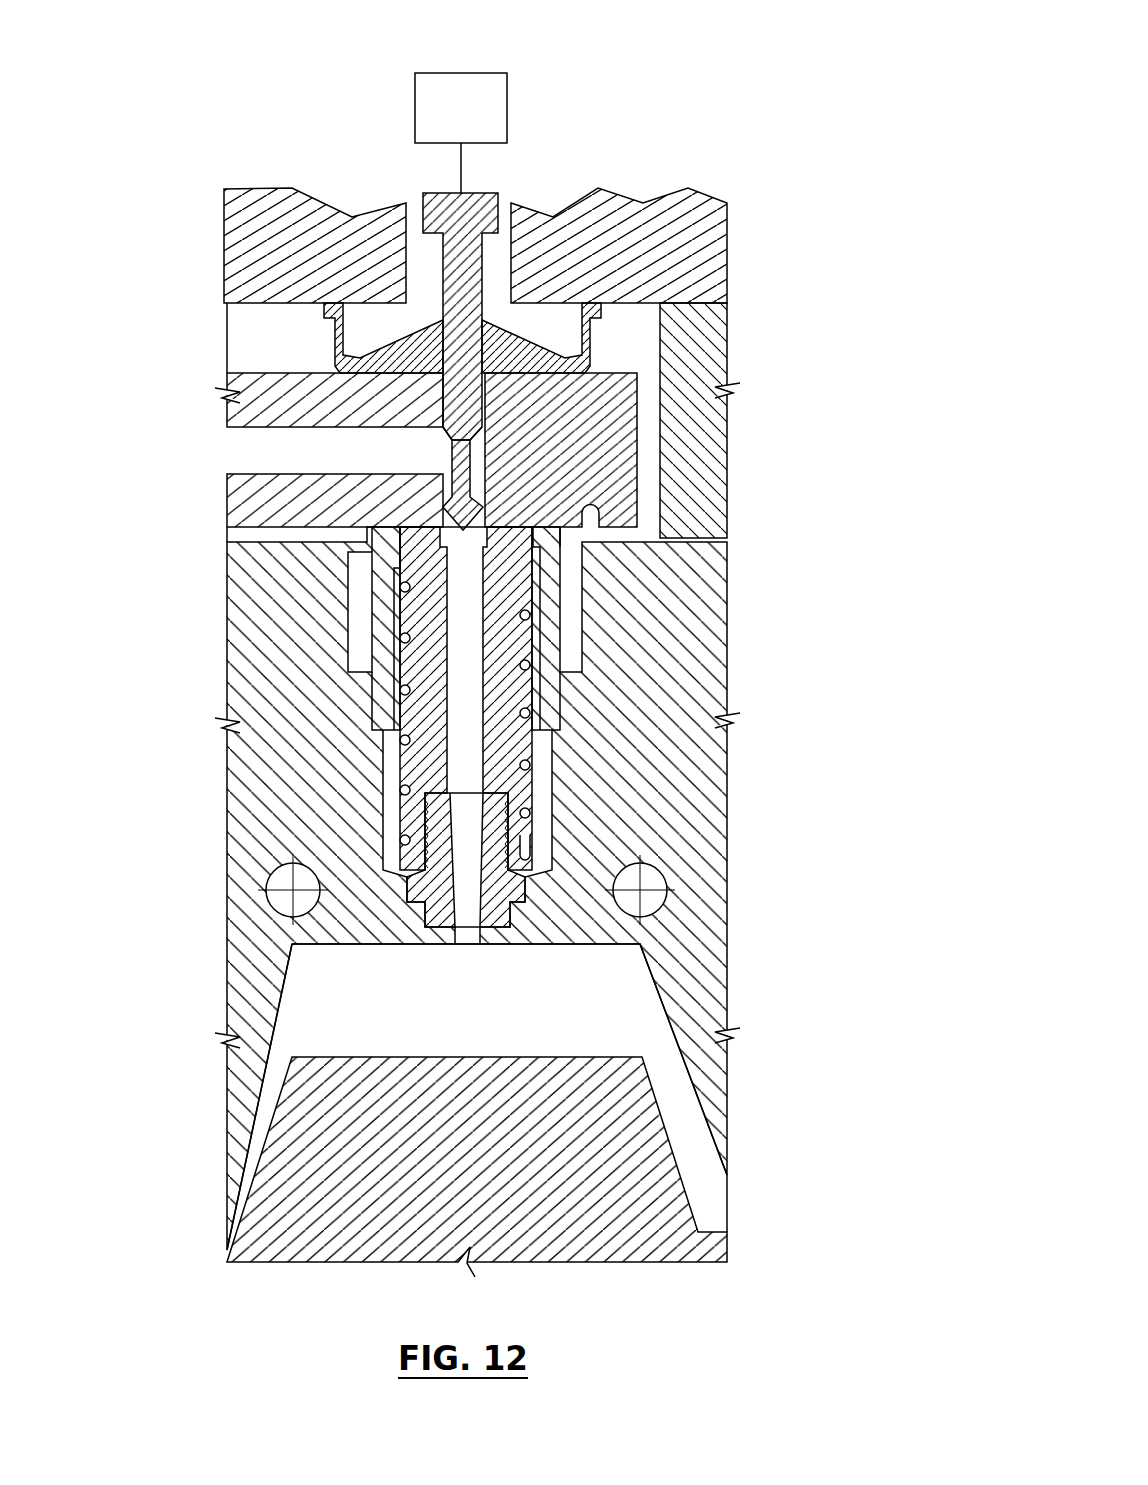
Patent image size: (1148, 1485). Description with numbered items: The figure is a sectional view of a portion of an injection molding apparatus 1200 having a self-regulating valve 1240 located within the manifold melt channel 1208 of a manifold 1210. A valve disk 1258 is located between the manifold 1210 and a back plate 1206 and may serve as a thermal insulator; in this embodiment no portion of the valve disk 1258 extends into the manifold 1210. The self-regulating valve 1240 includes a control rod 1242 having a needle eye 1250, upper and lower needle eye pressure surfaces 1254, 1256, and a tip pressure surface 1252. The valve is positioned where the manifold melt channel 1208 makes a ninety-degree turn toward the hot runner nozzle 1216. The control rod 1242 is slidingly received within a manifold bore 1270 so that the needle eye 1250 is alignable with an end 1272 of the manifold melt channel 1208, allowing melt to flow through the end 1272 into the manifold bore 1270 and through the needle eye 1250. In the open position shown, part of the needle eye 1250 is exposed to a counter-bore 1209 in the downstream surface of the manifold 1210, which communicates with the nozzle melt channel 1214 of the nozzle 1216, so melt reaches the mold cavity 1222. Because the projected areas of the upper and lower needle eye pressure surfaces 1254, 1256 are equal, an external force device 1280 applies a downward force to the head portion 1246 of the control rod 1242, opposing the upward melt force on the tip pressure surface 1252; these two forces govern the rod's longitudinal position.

The injection molding apparatus 1200 is at (703, 113).
The back plate 1206 is at (708, 232).
The control rod 1242 is at (431, 285).
The external force device 1280 is at (494, 116).
The head portion 1246 is at (500, 207).
The upper needle eye pressure surface 1254 is at (447, 432).
The valve disk 1258 is at (331, 341).
The self-regulating valve 1240 is at (632, 346).
The manifold 1210 is at (620, 452).
The manifold melt channel 1208 is at (290, 462).
The end of manifold melt channel 1272 is at (434, 447).
The manifold bore 1270 is at (478, 455).
The tip pressure surface 1252 is at (488, 518).
The needle eye 1250 is at (437, 458).
The counter-bore 1209 is at (490, 525).
The lower needle eye pressure surface 1256 is at (435, 520).
The hot runner nozzle 1216 is at (517, 692).
The nozzle melt channel 1214 is at (467, 728).
The mold cavity 1222 is at (496, 1011).